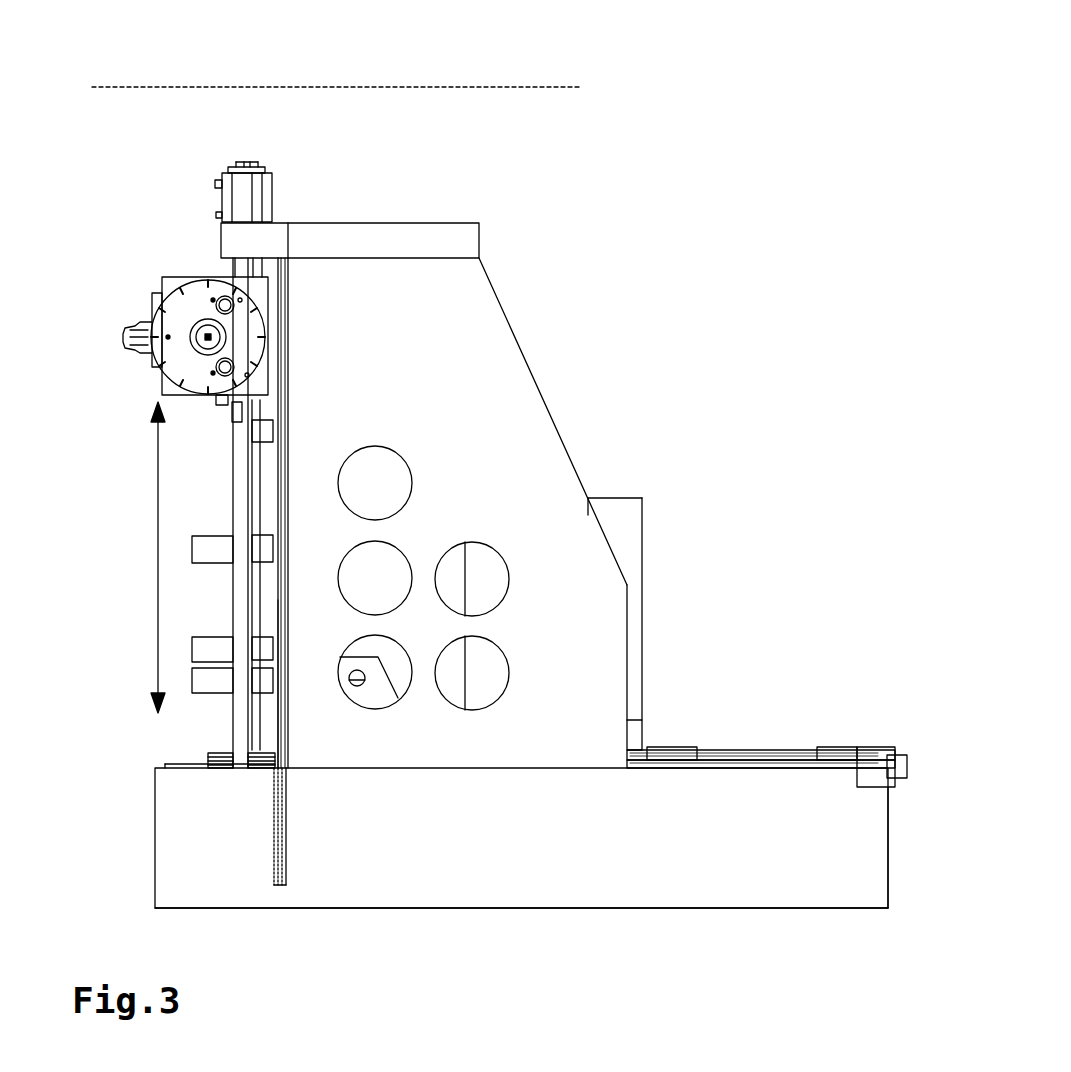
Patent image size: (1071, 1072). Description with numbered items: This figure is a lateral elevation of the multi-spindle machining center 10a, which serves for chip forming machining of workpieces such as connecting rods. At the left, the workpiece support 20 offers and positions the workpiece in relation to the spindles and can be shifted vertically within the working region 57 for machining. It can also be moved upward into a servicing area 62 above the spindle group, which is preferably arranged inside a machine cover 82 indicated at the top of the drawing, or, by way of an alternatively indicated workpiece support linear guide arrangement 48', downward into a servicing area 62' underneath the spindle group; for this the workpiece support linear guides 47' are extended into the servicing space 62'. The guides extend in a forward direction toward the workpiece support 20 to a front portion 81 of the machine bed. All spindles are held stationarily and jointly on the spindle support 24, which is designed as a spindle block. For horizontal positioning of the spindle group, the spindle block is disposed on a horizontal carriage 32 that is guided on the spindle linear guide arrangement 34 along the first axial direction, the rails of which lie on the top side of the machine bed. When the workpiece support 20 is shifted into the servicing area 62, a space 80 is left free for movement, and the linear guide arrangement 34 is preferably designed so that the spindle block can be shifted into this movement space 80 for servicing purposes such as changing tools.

The machine cover 82 is at (412, 87).
The multi-spindle machining center 10a is at (748, 151).
The workpiece support 20 is at (180, 290).
The servicing area 62 is at (339, 513).
The space for movement 80 is at (155, 553).
The spindle support 24 is at (452, 557).
The horizontal carriage 32 is at (645, 720).
The spindle linear guide arrangement 34 is at (780, 745).
The working region 57 is at (305, 708).
The servicing area 62' is at (480, 838).
The workpiece support linear guides 47' is at (327, 826).
The workpiece support linear guide arrangement 48' is at (338, 913).
The front portion of the machine bed 81 is at (268, 898).